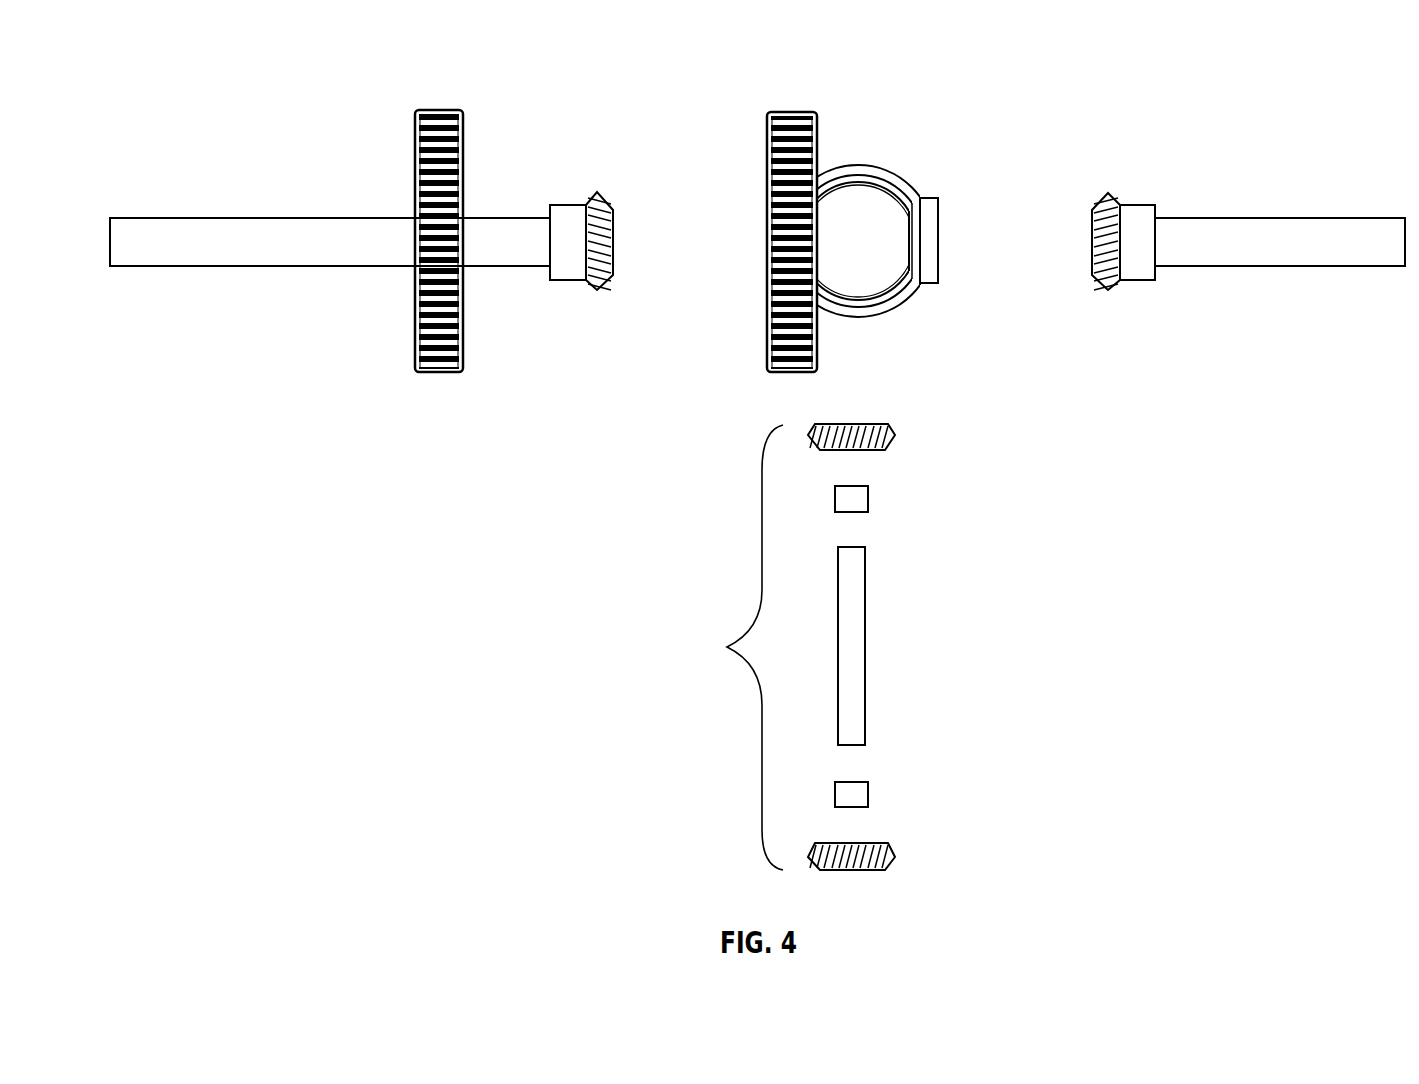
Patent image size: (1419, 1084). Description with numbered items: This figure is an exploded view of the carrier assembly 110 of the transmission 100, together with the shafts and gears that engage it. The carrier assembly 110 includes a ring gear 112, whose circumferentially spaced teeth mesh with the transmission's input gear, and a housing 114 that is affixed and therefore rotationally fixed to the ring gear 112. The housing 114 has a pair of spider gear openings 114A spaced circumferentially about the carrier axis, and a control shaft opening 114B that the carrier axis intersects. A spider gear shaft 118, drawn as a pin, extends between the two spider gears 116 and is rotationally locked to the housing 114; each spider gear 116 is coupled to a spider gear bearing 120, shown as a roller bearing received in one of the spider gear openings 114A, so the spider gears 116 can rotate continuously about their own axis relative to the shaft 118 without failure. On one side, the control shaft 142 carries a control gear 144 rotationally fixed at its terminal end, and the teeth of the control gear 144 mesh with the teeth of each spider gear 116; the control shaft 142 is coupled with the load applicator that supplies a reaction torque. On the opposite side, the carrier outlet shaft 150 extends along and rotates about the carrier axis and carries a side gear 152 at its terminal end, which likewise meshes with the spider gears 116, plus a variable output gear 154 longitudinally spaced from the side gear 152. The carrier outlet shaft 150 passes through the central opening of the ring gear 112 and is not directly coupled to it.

The transmission 100 is at (228, 78).
The carrier assembly 110 is at (757, 488).
The ring gear 112 is at (792, 110).
The housing 114 is at (909, 226).
The spider gear openings 114A is at (852, 162).
The control shaft opening 114B is at (940, 240).
The spider gears 116 is at (888, 432).
The spider gear shaft 118 is at (865, 647).
The spider gear bearings 120 is at (870, 498).
The control shaft 142 is at (1280, 218).
The control gear 144 is at (1108, 202).
The carrier outlet shaft 150 is at (307, 218).
The side gear 152 is at (597, 200).
The variable output gear 154 is at (415, 140).